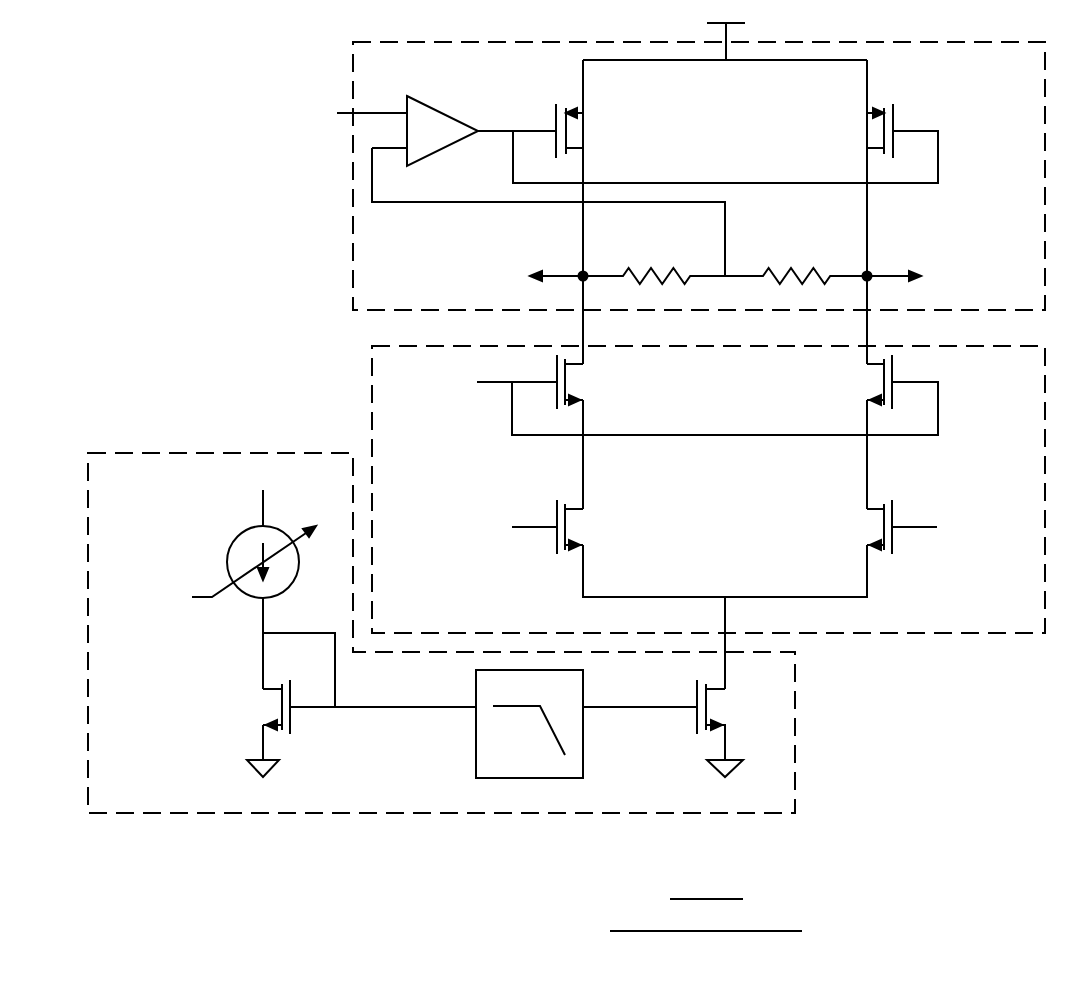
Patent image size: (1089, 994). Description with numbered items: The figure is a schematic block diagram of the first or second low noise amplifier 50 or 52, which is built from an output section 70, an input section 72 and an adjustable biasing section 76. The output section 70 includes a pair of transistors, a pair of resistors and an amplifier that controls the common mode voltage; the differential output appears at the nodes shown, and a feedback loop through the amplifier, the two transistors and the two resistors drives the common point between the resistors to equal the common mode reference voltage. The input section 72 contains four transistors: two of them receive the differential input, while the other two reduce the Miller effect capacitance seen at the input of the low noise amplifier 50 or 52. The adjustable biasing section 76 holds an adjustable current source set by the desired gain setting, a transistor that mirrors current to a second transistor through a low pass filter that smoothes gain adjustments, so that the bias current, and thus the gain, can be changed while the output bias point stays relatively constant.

The output section 70 is at (666, 193).
The input section 72 is at (708, 517).
The adjustable biasing section 76 is at (441, 633).
The first low noise amplifier 50 is at (566, 477).
The second low noise amplifier 52 is at (566, 477).